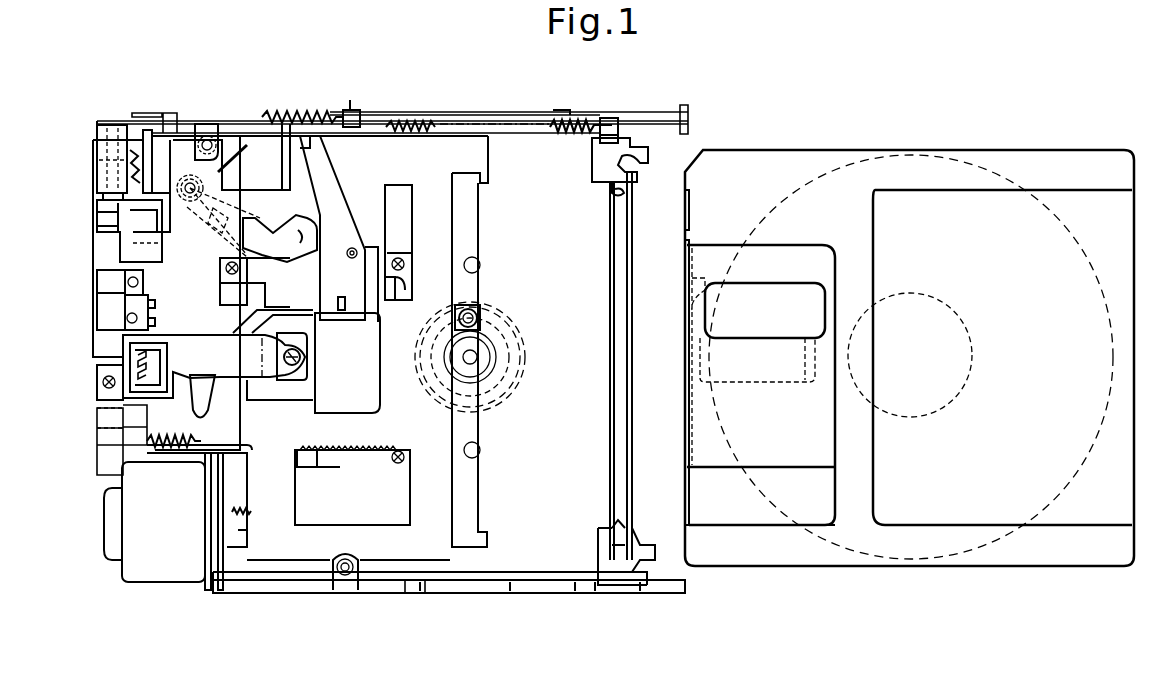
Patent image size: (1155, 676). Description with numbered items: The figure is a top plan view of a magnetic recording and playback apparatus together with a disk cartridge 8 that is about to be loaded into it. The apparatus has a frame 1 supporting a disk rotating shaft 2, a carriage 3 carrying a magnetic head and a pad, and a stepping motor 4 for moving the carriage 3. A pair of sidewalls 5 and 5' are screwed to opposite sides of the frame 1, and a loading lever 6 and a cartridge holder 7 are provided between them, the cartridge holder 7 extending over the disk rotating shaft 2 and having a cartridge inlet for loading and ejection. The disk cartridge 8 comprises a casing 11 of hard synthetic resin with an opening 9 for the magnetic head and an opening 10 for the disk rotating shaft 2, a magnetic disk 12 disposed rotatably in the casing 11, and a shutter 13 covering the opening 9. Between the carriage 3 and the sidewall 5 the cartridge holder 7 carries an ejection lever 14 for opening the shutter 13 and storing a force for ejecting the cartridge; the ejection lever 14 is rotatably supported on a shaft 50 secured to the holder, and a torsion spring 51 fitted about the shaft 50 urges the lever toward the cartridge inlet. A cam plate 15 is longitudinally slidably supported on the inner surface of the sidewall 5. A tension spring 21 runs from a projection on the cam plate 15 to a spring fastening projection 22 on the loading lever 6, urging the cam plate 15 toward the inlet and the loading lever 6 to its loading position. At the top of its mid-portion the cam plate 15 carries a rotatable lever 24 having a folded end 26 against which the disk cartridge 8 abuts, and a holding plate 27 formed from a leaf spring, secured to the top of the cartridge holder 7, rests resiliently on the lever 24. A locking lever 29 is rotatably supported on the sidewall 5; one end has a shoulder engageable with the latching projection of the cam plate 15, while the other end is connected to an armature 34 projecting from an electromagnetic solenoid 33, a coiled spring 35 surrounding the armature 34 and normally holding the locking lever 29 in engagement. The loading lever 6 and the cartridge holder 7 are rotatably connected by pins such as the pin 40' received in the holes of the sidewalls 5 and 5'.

The frame 1 is at (125, 268).
The disk rotating shaft 2 is at (478, 345).
The carriage 3 is at (150, 420).
The stepping motor 4 is at (172, 580).
The sidewall 5 is at (392, 101).
The sidewall 5' is at (449, 608).
The loading lever 6 is at (600, 330).
The cartridge holder 7 is at (303, 572).
The disk cartridge 8 is at (938, 150).
The opening for the magnetic head 9 is at (722, 376).
The opening for the disk rotating shaft 10 is at (905, 420).
The casing 11 is at (945, 560).
The magnetic disk 12 is at (833, 548).
The shutter 13 is at (700, 420).
The ejection lever 14 is at (200, 220).
The cam plate 15 is at (360, 120).
The tension spring 21 is at (412, 122).
The spring fastening projection 22 is at (608, 120).
The lever 24 is at (335, 118).
The folded end 26 is at (282, 170).
The holding plate 27 is at (335, 212).
The locking lever 29 is at (125, 135).
The electromagnetic solenoid 33 is at (168, 145).
The armature 34 is at (115, 185).
The coiled spring 35 is at (103, 195).
The pin 40' is at (431, 608).
The shaft 50 is at (193, 175).
The torsion spring 51 is at (222, 162).